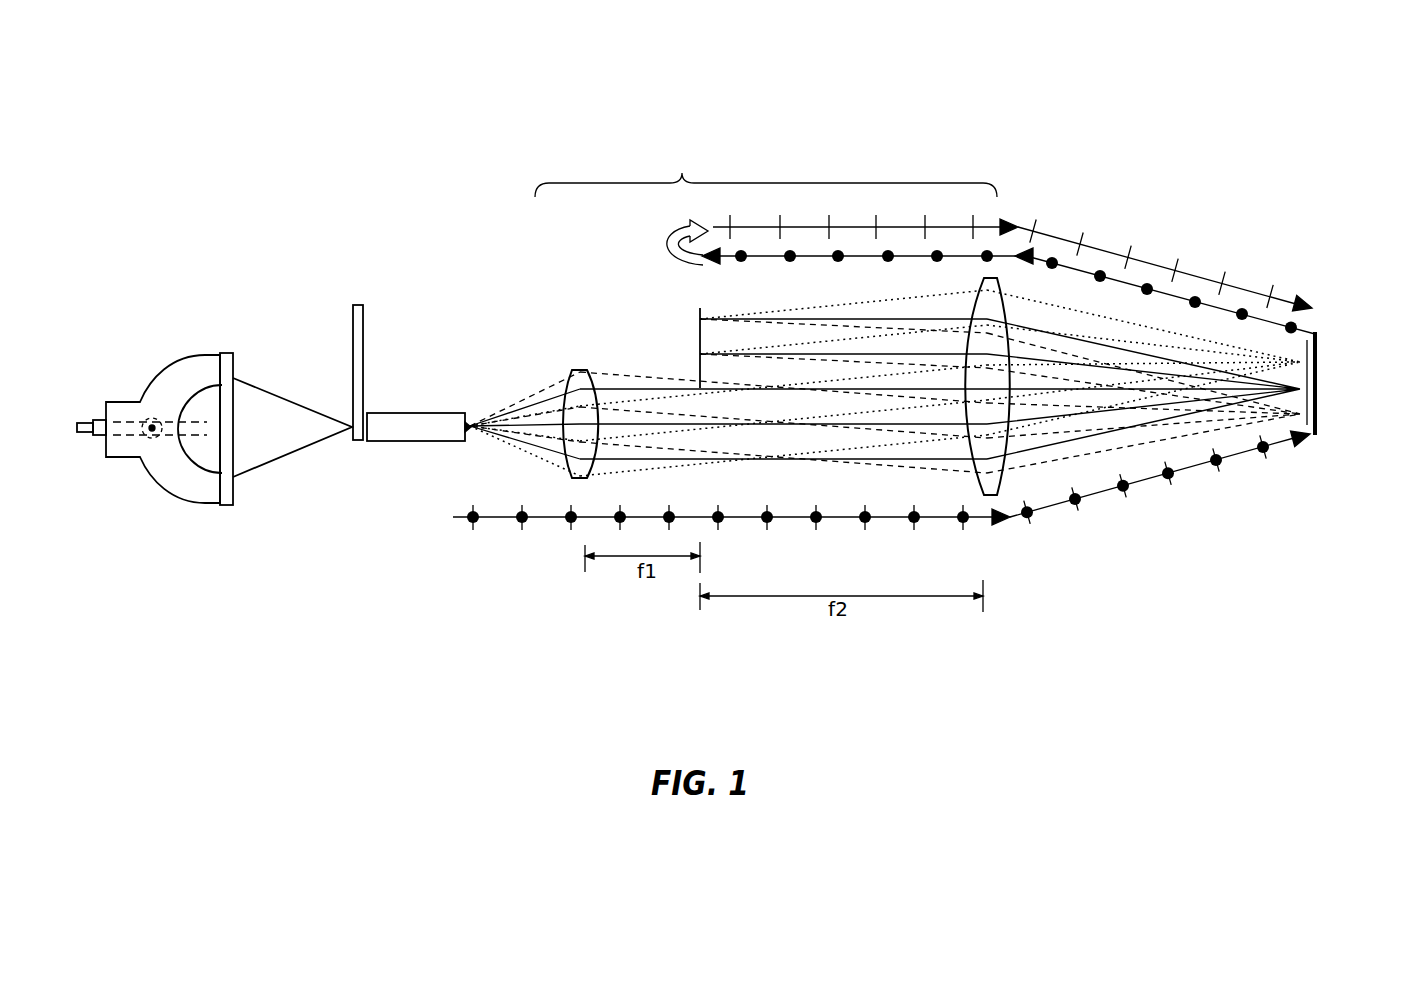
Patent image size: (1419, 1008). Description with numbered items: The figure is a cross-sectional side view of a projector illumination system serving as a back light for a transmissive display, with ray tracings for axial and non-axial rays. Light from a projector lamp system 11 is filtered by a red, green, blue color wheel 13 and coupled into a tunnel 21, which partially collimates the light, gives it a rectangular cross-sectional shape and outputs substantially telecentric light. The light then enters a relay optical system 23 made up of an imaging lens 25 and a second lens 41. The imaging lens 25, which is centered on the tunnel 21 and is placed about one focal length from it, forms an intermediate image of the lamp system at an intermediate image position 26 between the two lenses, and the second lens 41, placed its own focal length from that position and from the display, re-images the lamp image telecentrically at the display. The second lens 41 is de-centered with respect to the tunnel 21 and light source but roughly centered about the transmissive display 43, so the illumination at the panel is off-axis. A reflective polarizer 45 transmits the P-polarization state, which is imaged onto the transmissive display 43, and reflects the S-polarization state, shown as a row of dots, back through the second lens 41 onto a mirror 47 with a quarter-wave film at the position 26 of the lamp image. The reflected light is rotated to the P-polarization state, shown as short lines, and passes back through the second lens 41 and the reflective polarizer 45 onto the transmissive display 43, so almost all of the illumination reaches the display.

The projector lamp system 11 is at (167, 487).
The color wheel 13 is at (352, 317).
The tunnel 21 is at (420, 412).
The relay optical system 23 is at (925, 238).
The imaging lens 25 is at (575, 370).
The intermediate image position 26 is at (706, 472).
The second lens 41 is at (980, 287).
The transmissive display 43 is at (1318, 356).
The reflective polarizer 45 is at (1298, 410).
The mirror 47 is at (700, 338).